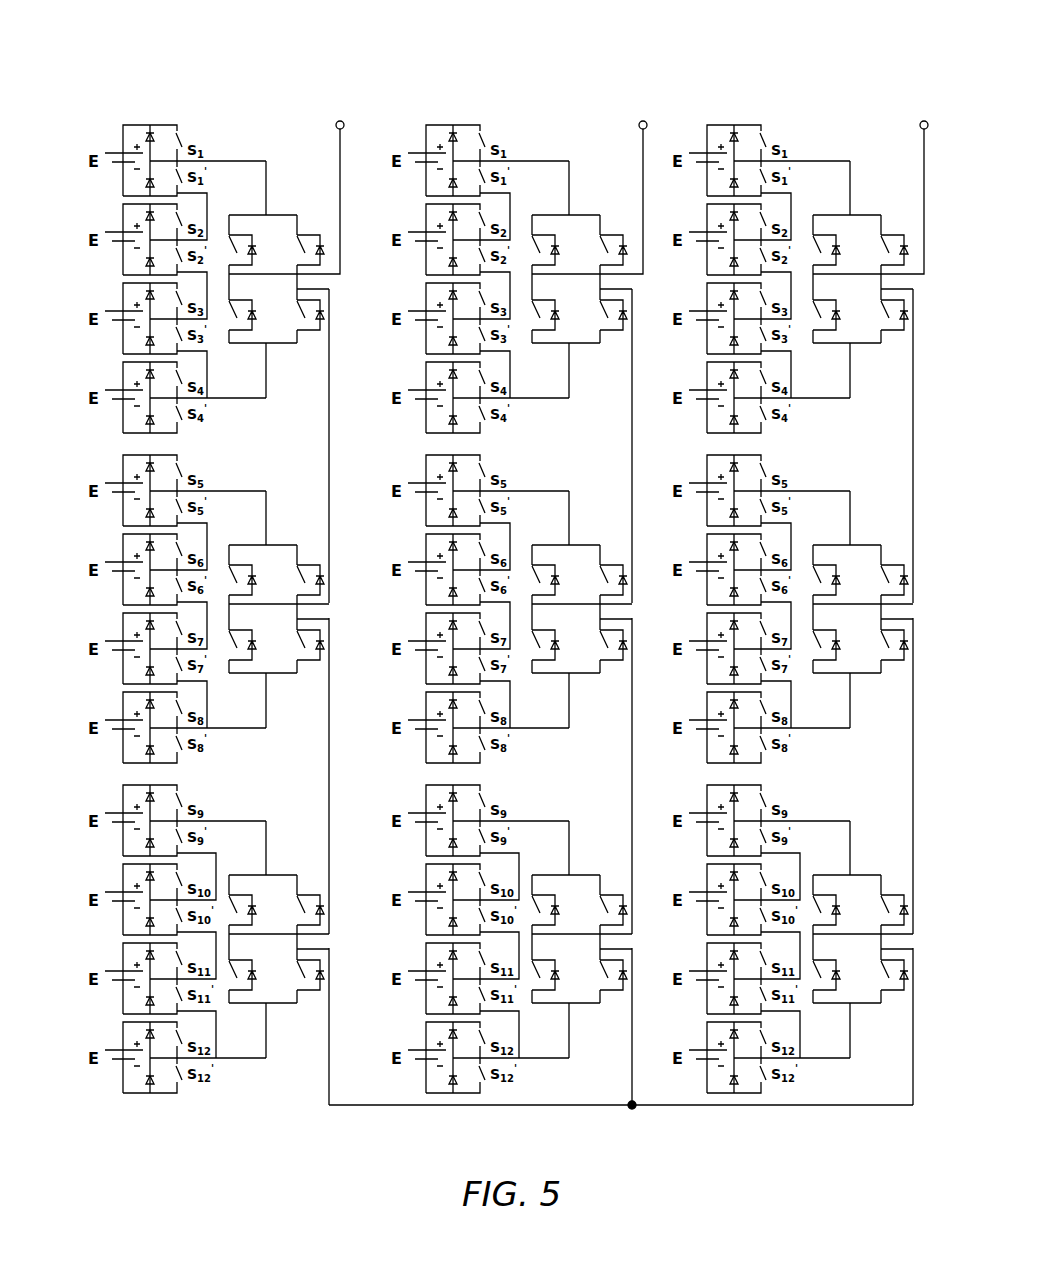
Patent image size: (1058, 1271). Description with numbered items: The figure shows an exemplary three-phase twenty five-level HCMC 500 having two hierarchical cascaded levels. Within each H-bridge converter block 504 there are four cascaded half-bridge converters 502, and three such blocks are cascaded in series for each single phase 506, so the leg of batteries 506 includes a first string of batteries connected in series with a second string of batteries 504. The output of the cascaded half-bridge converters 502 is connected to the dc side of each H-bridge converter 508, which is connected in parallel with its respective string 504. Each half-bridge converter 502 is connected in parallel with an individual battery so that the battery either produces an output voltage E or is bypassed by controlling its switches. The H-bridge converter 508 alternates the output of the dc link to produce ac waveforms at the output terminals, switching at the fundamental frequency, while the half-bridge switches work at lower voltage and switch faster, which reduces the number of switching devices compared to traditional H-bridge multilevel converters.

The three-phase twenty five-level HCMC 500 is at (893, 70).
The cascaded half-bridge converter 502 is at (83, 822).
The H-bridge converter block 504 is at (63, 198).
The single phase 506 is at (197, 108).
The H-bridge converter 508 is at (880, 385).